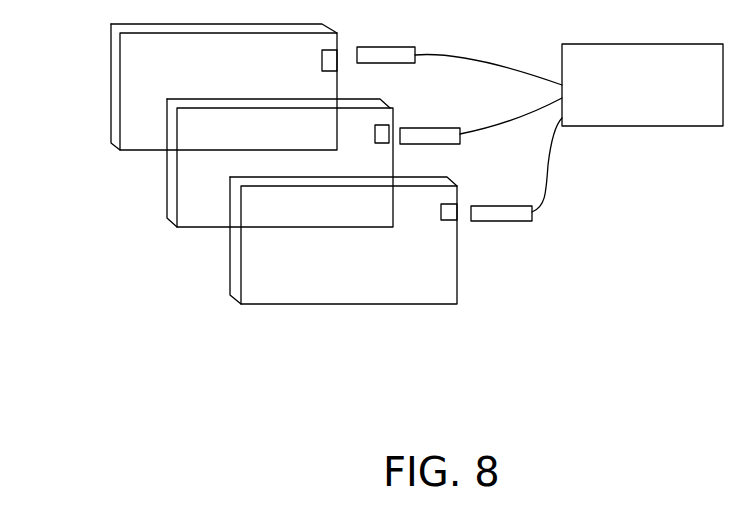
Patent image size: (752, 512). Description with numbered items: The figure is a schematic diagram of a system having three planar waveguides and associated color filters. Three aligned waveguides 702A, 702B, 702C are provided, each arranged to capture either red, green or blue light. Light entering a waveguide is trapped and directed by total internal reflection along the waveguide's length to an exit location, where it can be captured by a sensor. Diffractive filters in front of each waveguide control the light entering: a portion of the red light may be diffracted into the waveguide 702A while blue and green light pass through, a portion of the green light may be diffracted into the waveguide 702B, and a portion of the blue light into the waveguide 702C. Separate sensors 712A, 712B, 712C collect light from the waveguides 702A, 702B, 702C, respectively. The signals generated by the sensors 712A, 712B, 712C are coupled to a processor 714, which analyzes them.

The waveguide 702A is at (110, 120).
The waveguide 702B is at (160, 215).
The waveguide 702C is at (230, 283).
The sensor 712A is at (400, 47).
The sensor 712B is at (418, 128).
The sensor 712C is at (487, 221).
The processor 714 is at (642, 85).